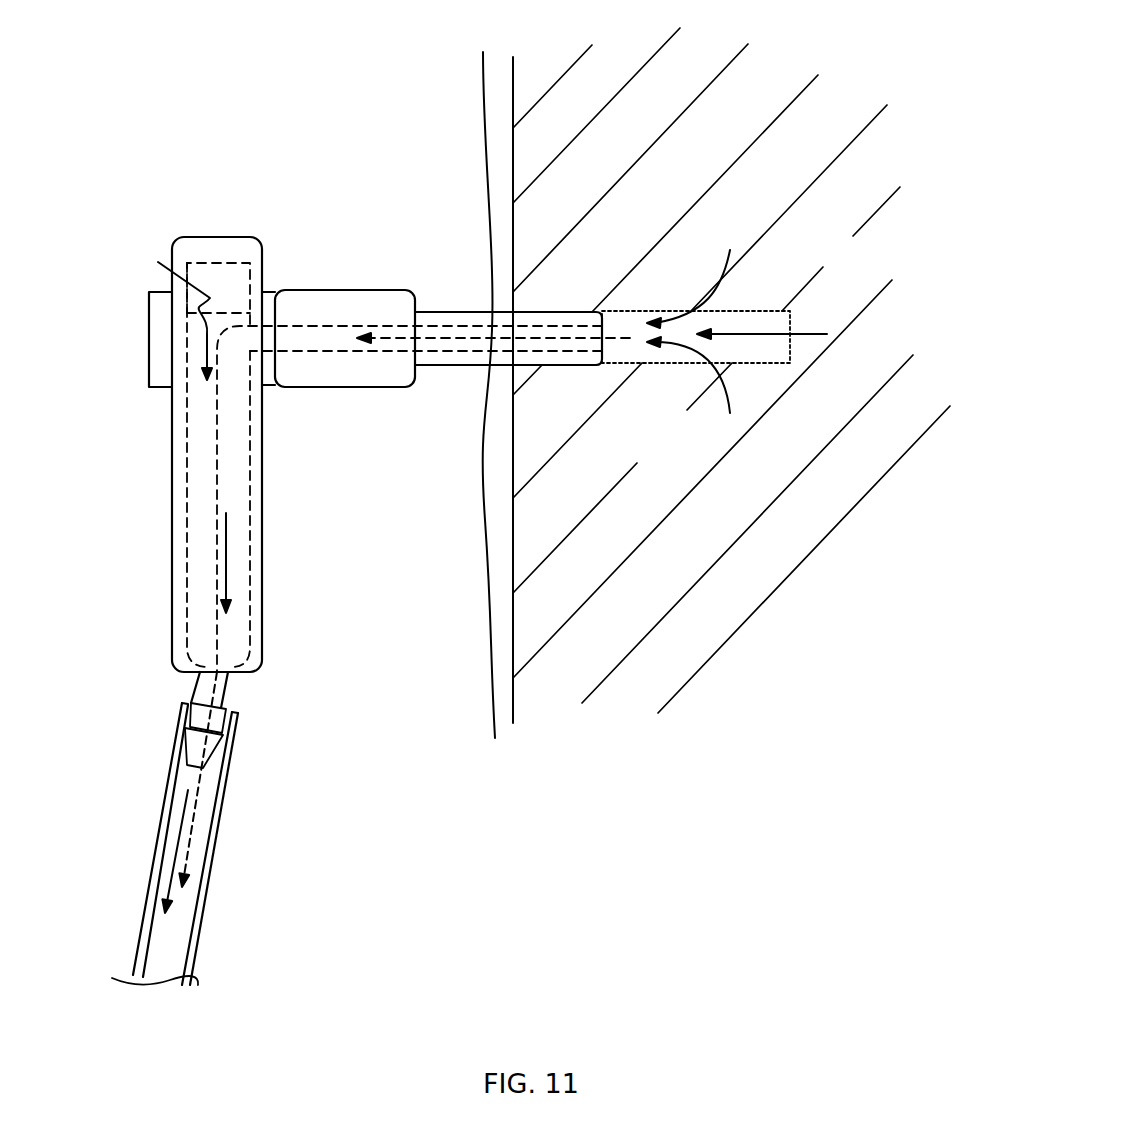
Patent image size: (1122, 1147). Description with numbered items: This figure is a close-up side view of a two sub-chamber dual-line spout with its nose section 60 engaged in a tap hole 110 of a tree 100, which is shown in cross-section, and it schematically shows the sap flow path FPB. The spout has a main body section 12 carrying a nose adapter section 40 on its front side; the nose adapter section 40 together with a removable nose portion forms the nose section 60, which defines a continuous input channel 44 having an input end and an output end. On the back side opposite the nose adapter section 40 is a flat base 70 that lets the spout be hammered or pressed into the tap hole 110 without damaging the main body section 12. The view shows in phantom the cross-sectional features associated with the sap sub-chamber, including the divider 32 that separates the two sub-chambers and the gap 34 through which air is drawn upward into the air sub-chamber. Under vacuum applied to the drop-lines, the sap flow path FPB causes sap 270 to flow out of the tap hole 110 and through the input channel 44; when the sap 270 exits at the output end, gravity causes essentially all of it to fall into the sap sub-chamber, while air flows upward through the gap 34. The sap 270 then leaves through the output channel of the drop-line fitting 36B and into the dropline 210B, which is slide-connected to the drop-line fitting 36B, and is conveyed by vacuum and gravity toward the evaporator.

The tree 100 is at (448, 62).
The main body section 12 is at (173, 498).
The gap 34 is at (212, 277).
The divider 32 is at (230, 473).
The sap flow path FPB is at (528, 338).
The nose adapter section 40 is at (273, 297).
The input channel 44 is at (448, 320).
The nose section 60 is at (408, 228).
The flat base 70 is at (150, 322).
The tap hole 110 is at (722, 317).
The drop-line fitting 36B is at (176, 689).
The dropline 210B is at (218, 840).
The sap 270 is at (172, 855).